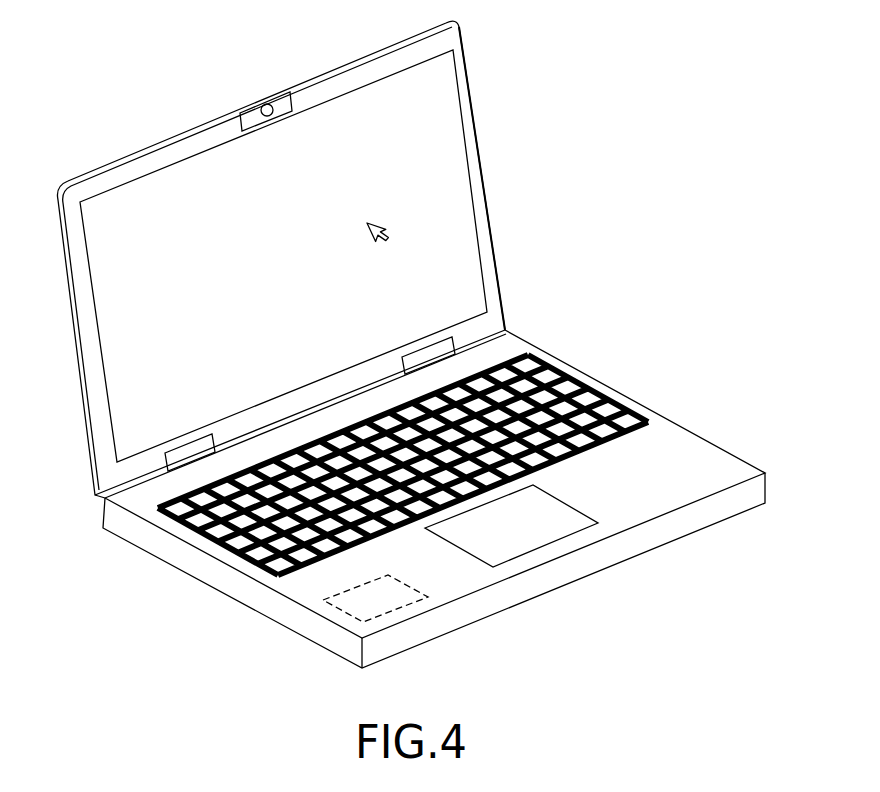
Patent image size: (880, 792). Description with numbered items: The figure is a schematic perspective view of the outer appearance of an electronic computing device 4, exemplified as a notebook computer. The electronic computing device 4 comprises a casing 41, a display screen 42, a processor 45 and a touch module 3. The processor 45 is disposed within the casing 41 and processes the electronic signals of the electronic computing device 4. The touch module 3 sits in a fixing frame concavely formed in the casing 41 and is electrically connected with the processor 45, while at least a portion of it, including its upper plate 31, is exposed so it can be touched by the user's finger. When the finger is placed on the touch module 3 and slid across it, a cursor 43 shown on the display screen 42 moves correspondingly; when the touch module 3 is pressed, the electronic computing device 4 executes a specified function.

The electronic computing device 4 is at (411, 354).
The casing 41 is at (688, 456).
The display screen 42 is at (443, 128).
The cursor 43 is at (373, 226).
The processor 45 is at (340, 608).
The upper plate 31 is at (548, 516).
The touch module 3 is at (524, 534).